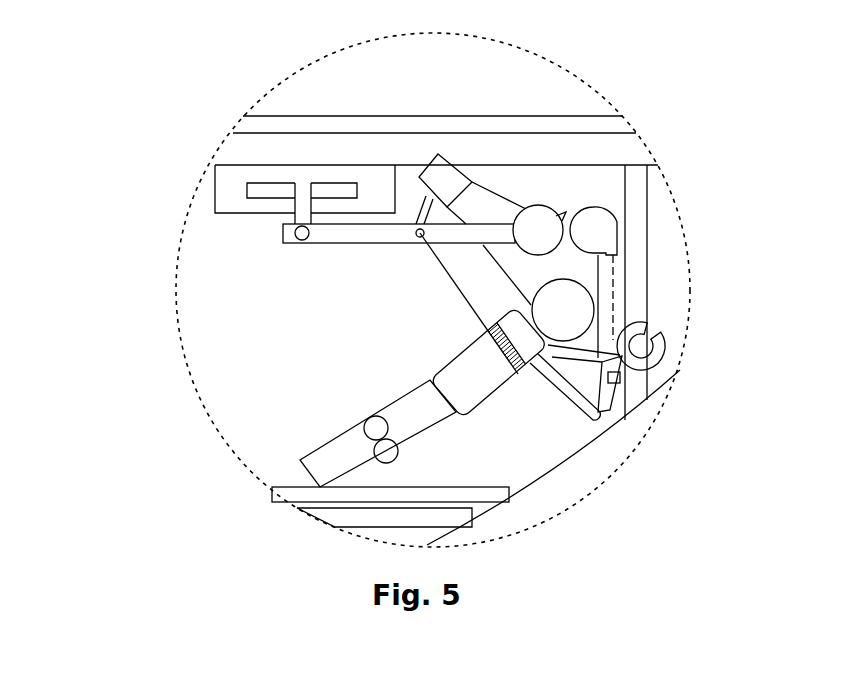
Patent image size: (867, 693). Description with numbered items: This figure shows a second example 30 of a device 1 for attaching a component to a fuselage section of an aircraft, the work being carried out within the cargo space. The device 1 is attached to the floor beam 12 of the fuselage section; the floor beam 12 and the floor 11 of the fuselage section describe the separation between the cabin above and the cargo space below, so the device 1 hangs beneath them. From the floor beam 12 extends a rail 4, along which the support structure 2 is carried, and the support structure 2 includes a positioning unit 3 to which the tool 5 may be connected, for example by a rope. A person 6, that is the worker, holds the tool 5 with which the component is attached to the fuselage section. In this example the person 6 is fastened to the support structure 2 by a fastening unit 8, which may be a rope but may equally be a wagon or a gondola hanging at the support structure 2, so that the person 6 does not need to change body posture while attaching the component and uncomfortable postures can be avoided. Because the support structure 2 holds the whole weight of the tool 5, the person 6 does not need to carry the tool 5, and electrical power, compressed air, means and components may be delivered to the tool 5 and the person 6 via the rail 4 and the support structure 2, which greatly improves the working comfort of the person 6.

The second example 30 is at (186, 66).
The device 1 is at (175, 194).
The support structure 2 is at (318, 270).
The positioning unit 3 is at (390, 236).
The rail 4 is at (270, 190).
The tool 5 is at (625, 365).
The person 6 is at (475, 380).
The fastening unit 8 is at (452, 320).
The floor 11 is at (543, 98).
The floor beam 12 is at (278, 147).